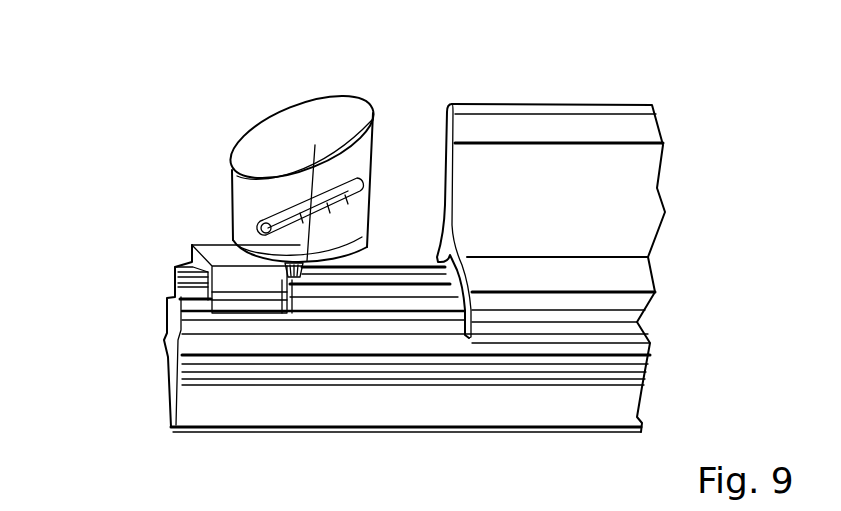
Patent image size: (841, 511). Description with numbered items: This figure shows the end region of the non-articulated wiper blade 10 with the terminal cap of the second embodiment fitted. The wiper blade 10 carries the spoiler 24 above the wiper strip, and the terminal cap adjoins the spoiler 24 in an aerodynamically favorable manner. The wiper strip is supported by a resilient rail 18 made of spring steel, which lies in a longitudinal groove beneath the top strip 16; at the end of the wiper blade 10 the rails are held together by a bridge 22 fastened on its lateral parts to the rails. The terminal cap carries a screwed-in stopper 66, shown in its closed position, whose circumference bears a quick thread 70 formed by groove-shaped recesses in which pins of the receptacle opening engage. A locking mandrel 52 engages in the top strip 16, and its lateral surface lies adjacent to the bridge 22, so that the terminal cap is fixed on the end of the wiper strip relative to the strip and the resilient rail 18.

The wiper blade 10 is at (683, 107).
The top strip 16 is at (180, 280).
The resilient rail 18 is at (230, 318).
The bridge 22 is at (205, 255).
The spoiler 24 is at (600, 220).
The locking mandrel 52 is at (297, 265).
The screwed-in stopper 66 is at (280, 133).
The quick thread 70 is at (275, 217).